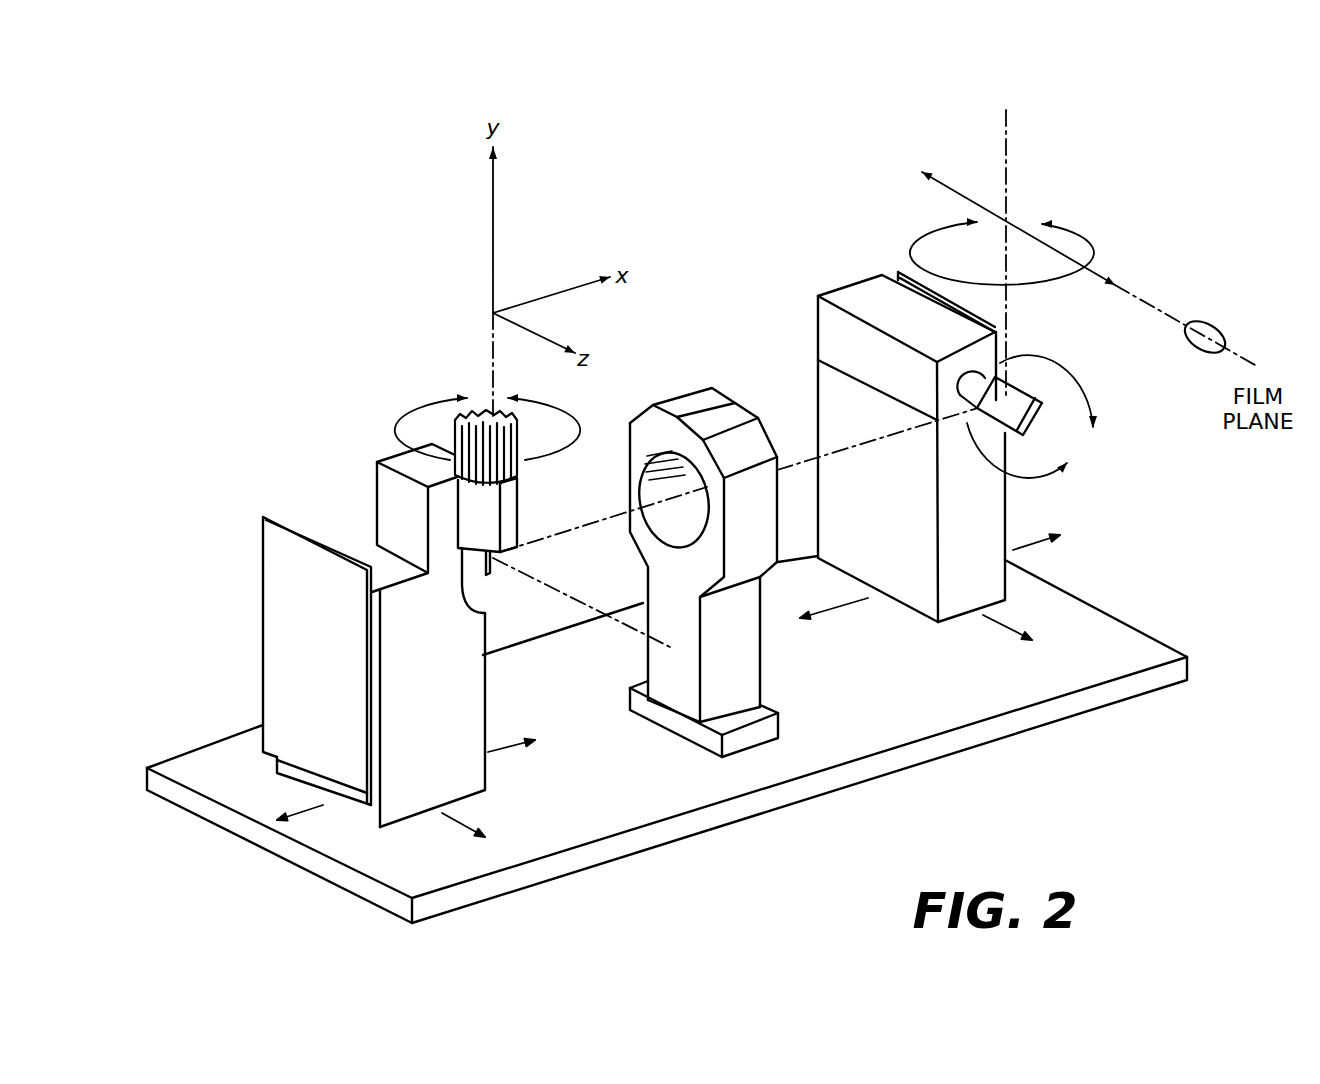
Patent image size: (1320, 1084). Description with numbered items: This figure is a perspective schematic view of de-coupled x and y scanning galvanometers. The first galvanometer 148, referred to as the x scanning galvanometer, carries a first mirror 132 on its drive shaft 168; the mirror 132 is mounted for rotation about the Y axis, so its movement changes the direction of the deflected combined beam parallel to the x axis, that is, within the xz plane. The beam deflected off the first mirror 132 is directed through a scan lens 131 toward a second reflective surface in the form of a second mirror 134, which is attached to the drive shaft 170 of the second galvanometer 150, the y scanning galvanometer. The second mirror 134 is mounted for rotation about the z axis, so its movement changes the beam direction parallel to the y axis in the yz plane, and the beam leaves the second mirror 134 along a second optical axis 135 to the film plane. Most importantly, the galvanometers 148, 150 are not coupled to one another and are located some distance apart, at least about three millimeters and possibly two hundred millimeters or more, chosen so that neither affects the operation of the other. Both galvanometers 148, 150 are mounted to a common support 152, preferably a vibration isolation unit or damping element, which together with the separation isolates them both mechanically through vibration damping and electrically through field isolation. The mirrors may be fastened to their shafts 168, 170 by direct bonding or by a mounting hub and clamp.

The scan lens 131 is at (758, 383).
The first mirror 132 is at (490, 568).
The second mirror 134 is at (1035, 412).
The second optical axis 135 is at (1008, 150).
The first galvanometer 148 is at (336, 420).
The second galvanometer 150 is at (820, 233).
The common support 152 is at (977, 703).
The drive shaft 168 is at (507, 413).
The drive shaft 170 is at (977, 408).